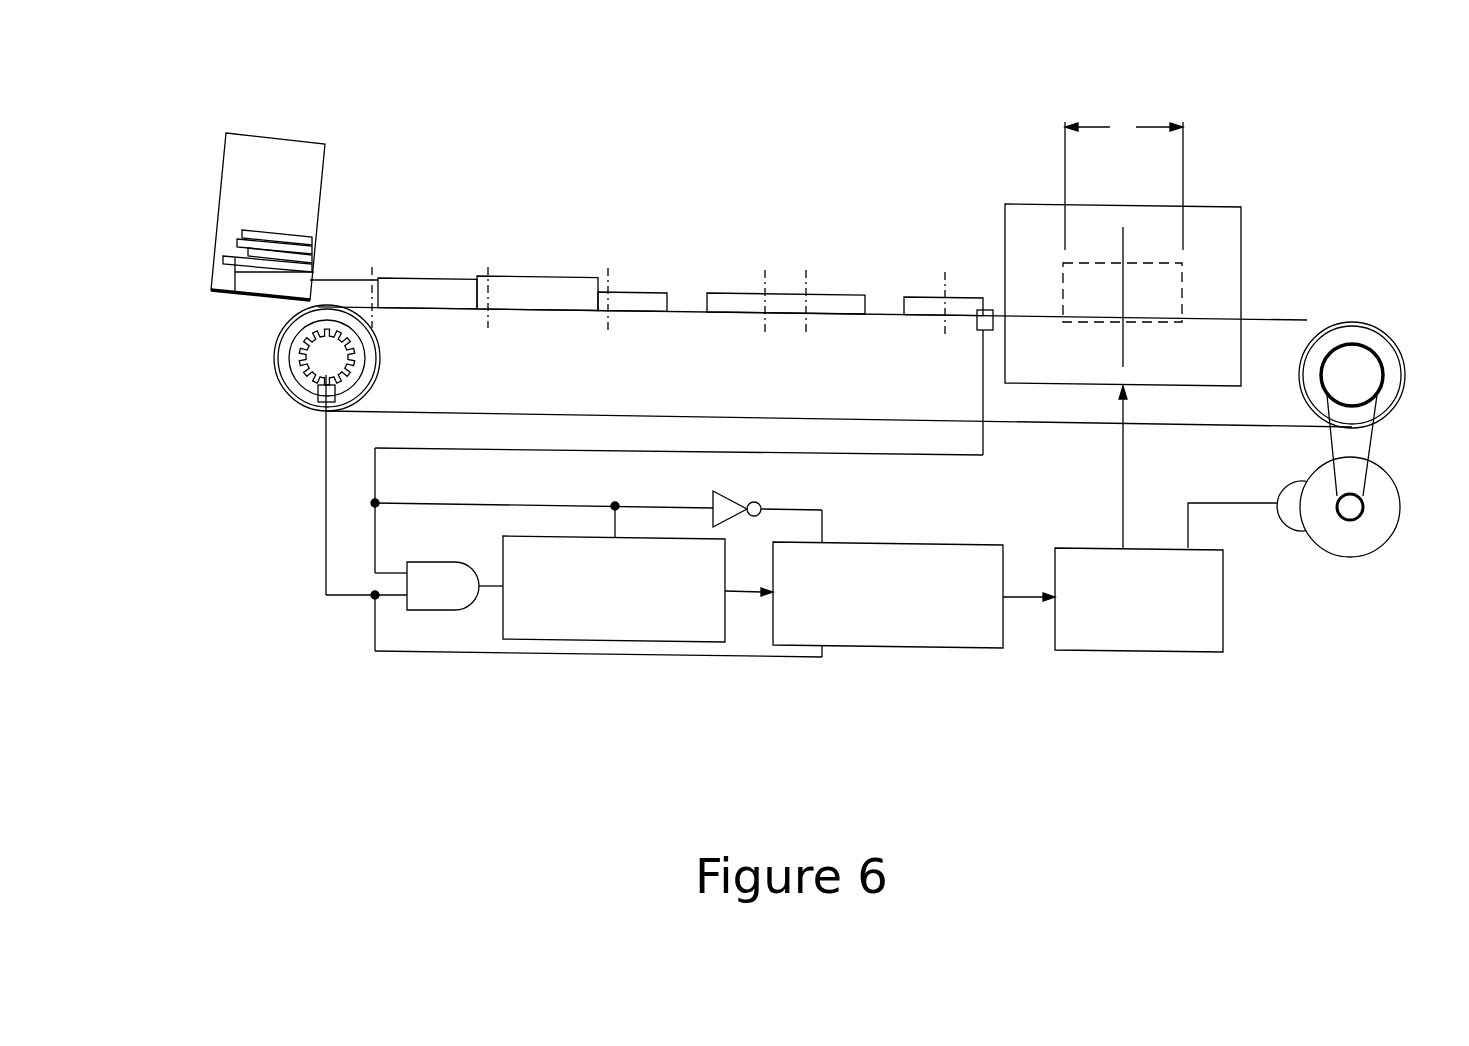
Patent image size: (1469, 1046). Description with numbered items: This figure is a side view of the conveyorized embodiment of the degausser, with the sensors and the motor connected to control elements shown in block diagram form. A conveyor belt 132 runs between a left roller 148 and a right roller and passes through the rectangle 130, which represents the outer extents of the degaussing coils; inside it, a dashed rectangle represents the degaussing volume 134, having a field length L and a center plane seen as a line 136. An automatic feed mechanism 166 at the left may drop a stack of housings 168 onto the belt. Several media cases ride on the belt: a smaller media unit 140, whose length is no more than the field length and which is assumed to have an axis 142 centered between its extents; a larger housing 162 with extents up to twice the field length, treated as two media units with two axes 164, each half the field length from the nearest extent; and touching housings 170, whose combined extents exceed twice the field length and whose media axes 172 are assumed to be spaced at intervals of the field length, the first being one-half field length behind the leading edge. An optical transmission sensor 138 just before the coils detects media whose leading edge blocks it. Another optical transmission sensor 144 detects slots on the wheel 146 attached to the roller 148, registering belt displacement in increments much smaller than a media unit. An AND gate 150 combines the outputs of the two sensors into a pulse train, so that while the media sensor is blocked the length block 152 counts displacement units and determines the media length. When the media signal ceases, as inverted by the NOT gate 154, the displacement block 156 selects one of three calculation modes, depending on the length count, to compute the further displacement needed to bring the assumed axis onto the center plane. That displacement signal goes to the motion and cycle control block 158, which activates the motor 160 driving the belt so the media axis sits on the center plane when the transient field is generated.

The rectangle representing outer extents of the coils 130 is at (1241, 292).
The conveyor belt 132 is at (1308, 320).
The degaussing volume 134 is at (1063, 275).
The center plane 136 is at (1123, 292).
The optical transmission sensor 138 is at (982, 330).
The smaller media unit 140 is at (945, 300).
The axis 142 is at (963, 300).
The optical transmission sensor 144 is at (317, 410).
The wheel 146 is at (297, 362).
The roller 148 is at (380, 362).
The AND gate 150 is at (438, 602).
The length block 152 is at (617, 635).
The NOT gate 154 is at (735, 505).
The displacement block 156 is at (872, 642).
The motion and cycle control block 158 is at (1207, 615).
The motor 160 is at (1352, 535).
The housing 162 is at (730, 302).
The axes 164 is at (805, 280).
The automatic feed mechanism 166 is at (282, 147).
The stack of housings 168 is at (272, 243).
The touching housings 170 is at (423, 293).
The media axes 172 is at (608, 277).